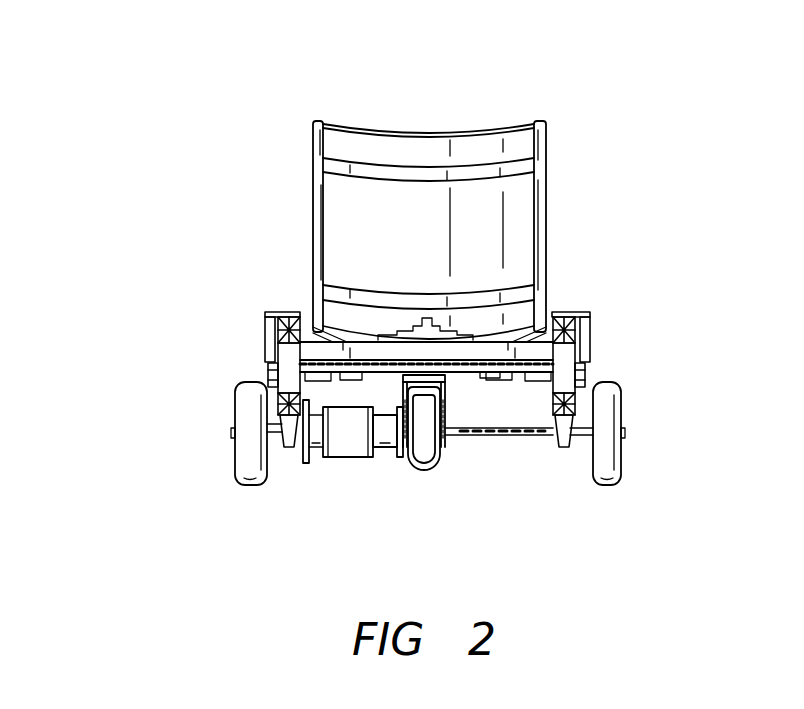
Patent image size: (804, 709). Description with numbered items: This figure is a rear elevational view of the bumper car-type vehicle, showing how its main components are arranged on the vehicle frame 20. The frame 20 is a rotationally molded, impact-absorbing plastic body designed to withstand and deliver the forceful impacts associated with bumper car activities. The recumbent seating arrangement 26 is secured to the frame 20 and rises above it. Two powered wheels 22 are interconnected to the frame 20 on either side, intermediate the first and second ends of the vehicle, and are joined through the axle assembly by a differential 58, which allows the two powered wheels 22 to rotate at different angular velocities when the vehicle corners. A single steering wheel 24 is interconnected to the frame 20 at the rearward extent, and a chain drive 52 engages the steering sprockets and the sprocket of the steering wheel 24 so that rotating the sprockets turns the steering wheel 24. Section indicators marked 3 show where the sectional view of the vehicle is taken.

The section line 3- 3 is at (114, 75).
The vehicle frame 20 is at (590, 363).
The powered wheels 22 is at (245, 462).
The steering wheel 24 is at (433, 460).
The recumbent seating arrangement 26 is at (545, 213).
The chain drive 52 is at (480, 375).
The differential 58 is at (350, 440).